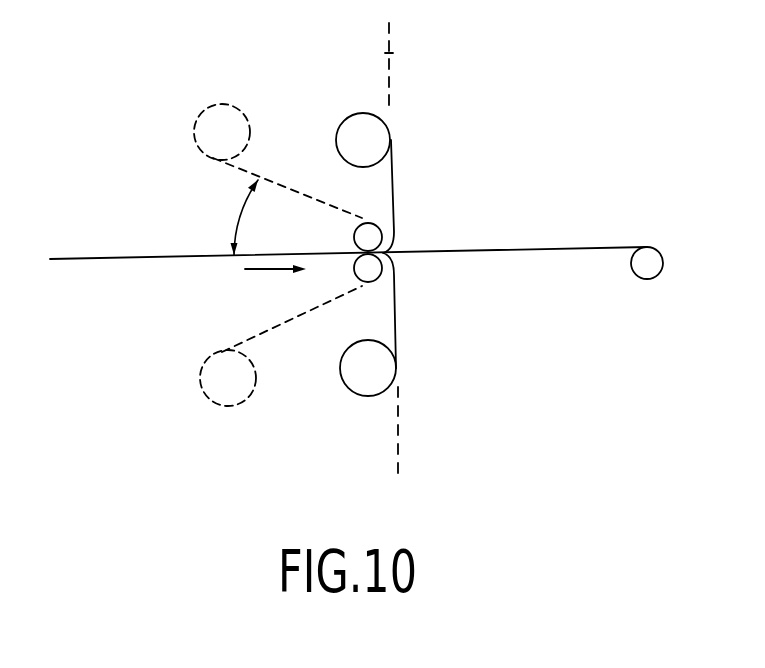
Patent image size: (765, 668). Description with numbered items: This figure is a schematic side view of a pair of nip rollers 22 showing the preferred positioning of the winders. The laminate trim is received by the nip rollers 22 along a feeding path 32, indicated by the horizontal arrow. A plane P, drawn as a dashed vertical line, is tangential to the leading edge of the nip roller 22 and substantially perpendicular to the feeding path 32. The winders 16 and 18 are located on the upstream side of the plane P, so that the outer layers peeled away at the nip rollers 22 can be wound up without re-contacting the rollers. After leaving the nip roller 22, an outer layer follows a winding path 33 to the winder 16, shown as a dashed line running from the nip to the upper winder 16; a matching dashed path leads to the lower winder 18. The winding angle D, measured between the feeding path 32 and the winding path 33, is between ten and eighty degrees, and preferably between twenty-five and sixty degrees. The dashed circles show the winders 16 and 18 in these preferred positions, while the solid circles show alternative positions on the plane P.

The winder 16 is at (389, 102).
The winder 18 is at (397, 368).
The nip roller 22 is at (353, 270).
The path 32 is at (257, 270).
The winding path 33 is at (292, 190).
The plane P is at (386, 53).
The winding angle D is at (236, 217).